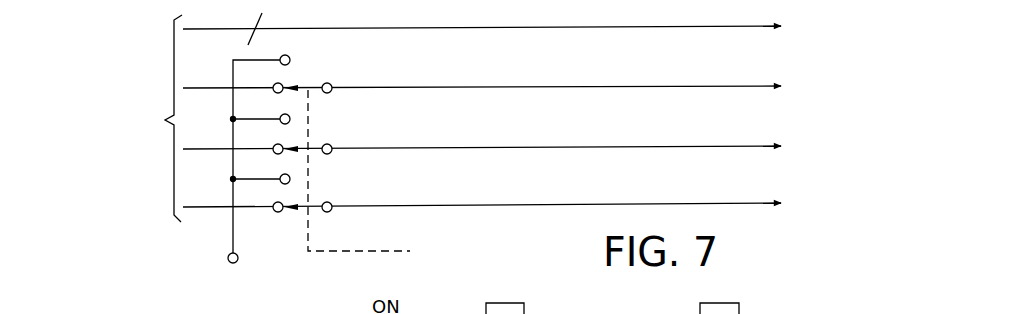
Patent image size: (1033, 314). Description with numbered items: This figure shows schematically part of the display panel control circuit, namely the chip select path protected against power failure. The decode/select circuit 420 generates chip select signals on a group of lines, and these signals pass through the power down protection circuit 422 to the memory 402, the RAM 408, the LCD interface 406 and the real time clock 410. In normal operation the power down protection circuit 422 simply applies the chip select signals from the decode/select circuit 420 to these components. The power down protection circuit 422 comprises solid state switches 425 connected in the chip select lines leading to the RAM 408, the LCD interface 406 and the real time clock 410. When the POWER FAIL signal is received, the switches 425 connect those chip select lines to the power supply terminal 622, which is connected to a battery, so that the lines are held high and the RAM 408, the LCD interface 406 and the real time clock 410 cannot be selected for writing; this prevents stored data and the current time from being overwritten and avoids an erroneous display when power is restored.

The memory 402 is at (502, 29).
The RAM 408 is at (502, 86).
The LCD interface 406 is at (502, 146).
The real time clock 410 is at (502, 203).
The decode/select circuit 420 is at (151, 118).
The power down protection circuit 422 is at (205, 253).
The solid state switches 425 is at (313, 91).
The power supply terminal 622 is at (252, 262).